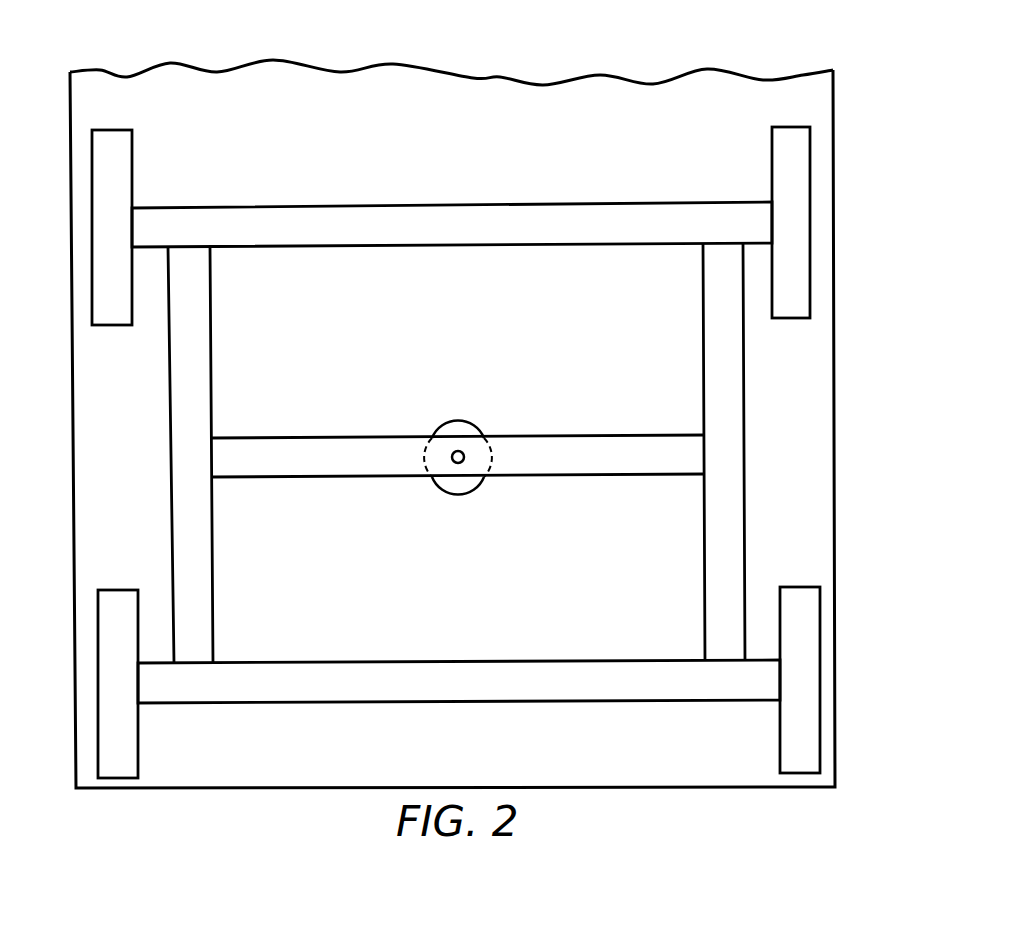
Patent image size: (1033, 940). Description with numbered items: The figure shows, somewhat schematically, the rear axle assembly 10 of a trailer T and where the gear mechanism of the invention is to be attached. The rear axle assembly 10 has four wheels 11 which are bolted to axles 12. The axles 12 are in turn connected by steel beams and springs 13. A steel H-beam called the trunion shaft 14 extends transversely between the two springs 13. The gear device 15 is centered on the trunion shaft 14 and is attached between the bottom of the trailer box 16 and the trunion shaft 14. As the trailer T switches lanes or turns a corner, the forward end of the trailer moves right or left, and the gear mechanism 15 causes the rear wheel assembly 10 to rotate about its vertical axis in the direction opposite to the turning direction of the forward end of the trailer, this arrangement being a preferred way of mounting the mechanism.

The trailer T is at (765, 62).
The rear axle assembly 10 is at (468, 420).
The wheels 11 is at (125, 150).
The axles 12 is at (398, 214).
The steel beams and springs 13 is at (209, 377).
The trunion shaft 14 is at (565, 446).
The gear device 15 is at (462, 419).
The trailer box 16 is at (342, 165).